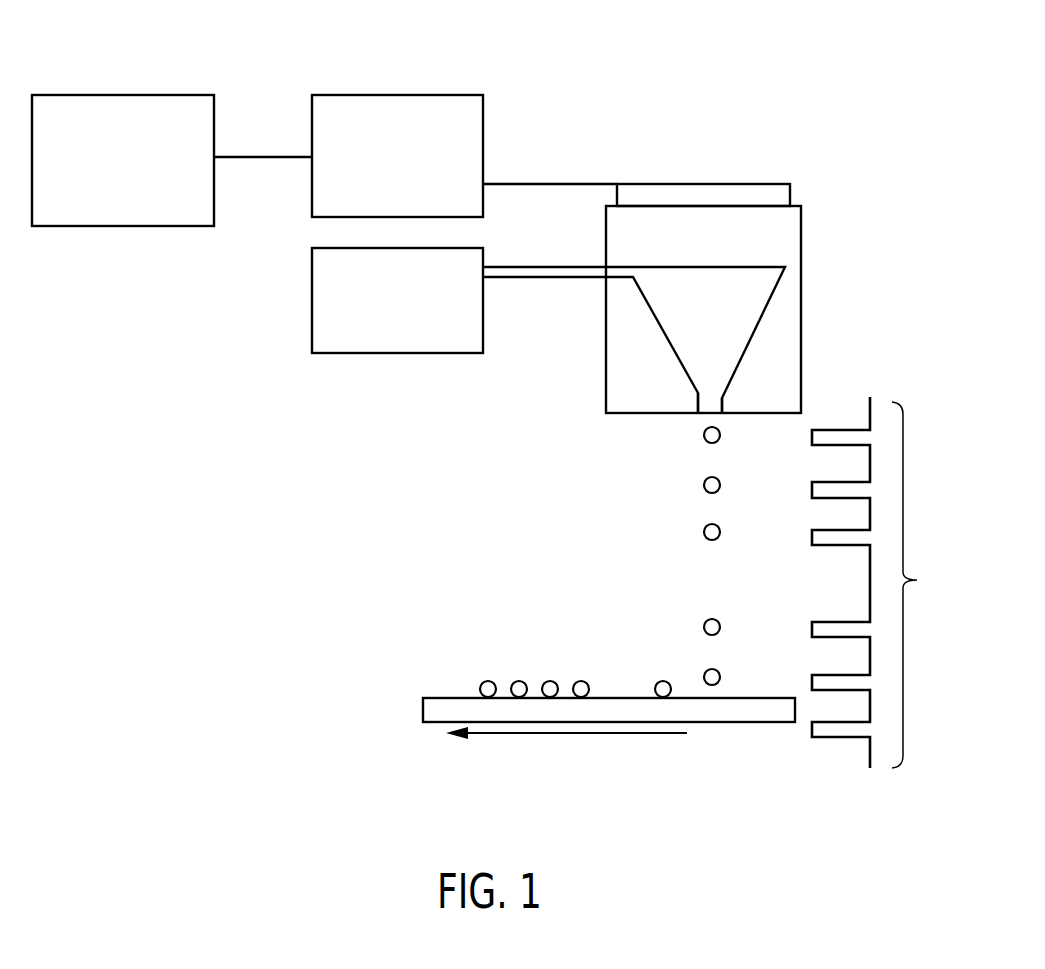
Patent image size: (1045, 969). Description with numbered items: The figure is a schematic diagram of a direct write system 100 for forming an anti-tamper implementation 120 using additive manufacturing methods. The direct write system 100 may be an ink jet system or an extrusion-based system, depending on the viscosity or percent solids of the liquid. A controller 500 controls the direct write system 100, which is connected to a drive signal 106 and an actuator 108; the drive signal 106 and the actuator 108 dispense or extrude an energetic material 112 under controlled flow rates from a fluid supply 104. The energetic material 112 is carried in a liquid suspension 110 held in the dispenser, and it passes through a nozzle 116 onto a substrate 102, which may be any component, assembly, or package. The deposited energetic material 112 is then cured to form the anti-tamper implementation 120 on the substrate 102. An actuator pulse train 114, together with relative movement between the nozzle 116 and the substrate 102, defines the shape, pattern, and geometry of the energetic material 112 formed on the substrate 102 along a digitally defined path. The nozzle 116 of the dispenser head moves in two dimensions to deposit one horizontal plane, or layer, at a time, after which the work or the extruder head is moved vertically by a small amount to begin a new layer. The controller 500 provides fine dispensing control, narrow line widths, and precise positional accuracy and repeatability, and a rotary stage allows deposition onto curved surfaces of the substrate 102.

The direct write system 100 is at (824, 97).
The controller 500 is at (123, 93).
The drive signal 106 is at (397, 93).
The fluid supply 104 is at (312, 297).
The actuator 108 is at (688, 193).
The liquid suspension 110 is at (698, 285).
The nozzle 116 is at (707, 418).
The energetic material 112 is at (704, 531).
The actuator pulse train 114 is at (881, 582).
The substrate 102 is at (773, 723).
The anti-tamper implementation 120 is at (421, 659).